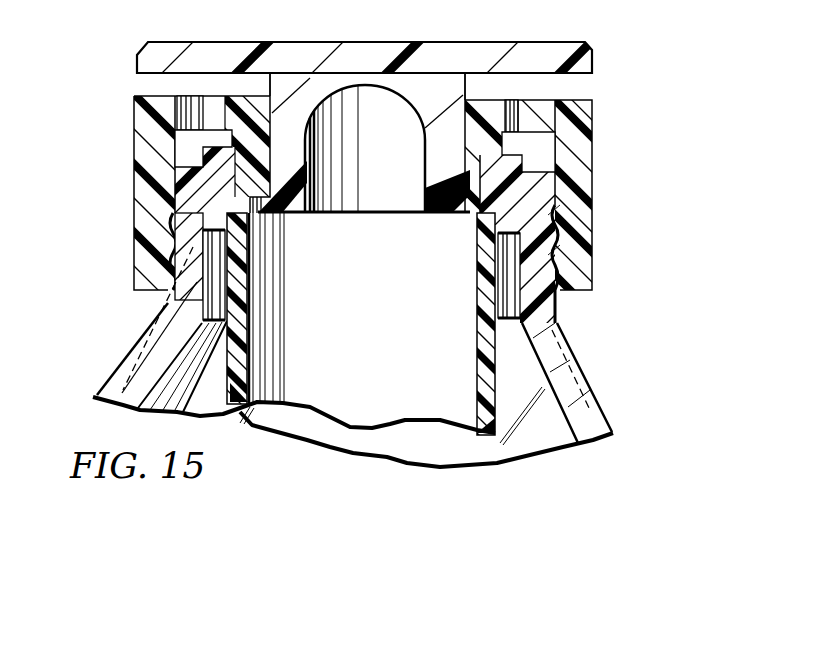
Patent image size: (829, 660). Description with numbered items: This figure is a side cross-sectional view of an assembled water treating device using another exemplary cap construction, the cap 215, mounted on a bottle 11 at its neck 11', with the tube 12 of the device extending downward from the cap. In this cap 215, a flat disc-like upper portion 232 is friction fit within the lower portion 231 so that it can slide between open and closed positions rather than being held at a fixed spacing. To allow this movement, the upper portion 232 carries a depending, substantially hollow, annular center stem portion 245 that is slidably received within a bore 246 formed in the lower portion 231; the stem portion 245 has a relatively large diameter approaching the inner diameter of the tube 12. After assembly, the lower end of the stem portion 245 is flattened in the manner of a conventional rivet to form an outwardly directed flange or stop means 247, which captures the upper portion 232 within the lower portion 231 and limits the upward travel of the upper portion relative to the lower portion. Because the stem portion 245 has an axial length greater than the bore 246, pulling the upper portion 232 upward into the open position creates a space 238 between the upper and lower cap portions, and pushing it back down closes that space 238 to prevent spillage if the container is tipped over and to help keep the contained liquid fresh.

The cap 215 is at (640, 19).
The upper portion 232 is at (473, 48).
The lower portion 231 is at (134, 100).
The bore 246 is at (274, 104).
The center stem portion 245 is at (434, 159).
The stop means 247 is at (463, 217).
The space 238 is at (573, 76).
The tube 12 is at (487, 370).
The bottle 11 is at (573, 383).
The neck 11' is at (571, 264).